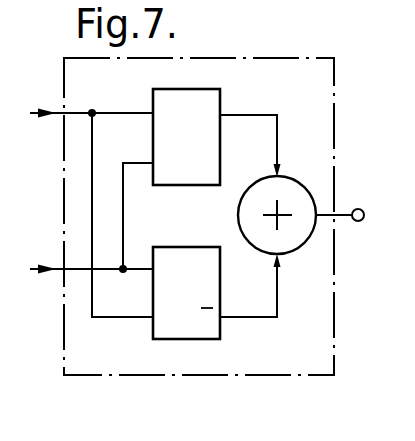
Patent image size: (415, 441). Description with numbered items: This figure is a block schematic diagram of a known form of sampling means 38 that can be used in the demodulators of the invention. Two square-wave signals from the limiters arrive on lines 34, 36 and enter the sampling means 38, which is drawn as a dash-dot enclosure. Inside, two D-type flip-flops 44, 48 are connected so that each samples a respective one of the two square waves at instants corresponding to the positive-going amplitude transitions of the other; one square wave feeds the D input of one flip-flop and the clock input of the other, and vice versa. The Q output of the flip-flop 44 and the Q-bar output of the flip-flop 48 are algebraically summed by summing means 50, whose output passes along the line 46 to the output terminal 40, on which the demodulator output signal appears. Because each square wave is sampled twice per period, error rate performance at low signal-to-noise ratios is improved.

The line 34 is at (57, 108).
The line 36 is at (57, 264).
The sampling means 38 is at (295, 59).
The output terminal 40 is at (357, 208).
The D-type flip-flop 44 is at (220, 163).
The output line 46 is at (342, 225).
The D-type flip-flop 48 is at (220, 275).
The summing means 50 is at (305, 188).